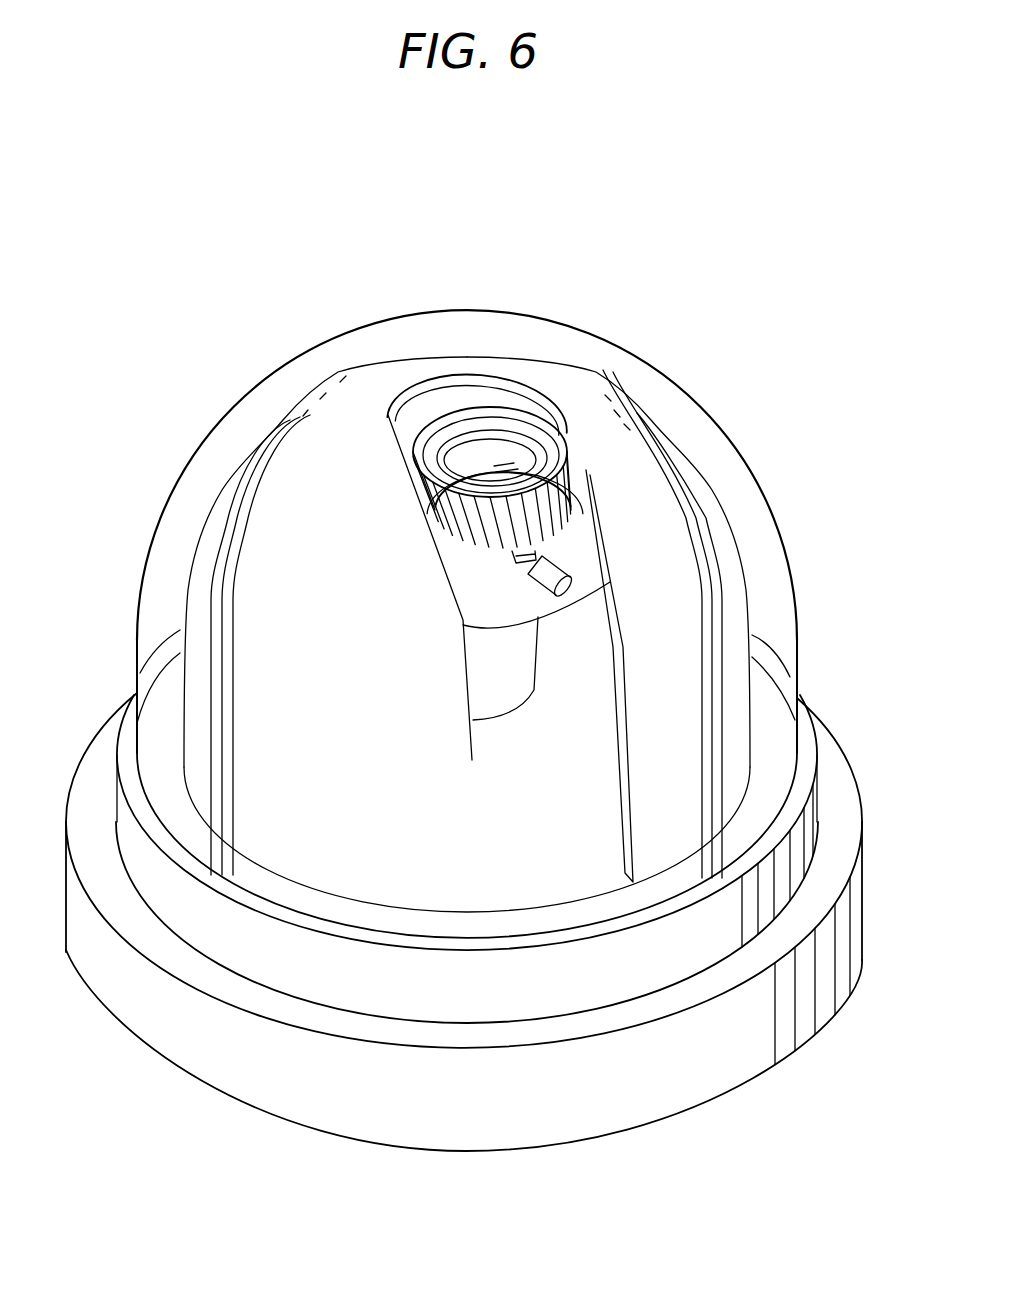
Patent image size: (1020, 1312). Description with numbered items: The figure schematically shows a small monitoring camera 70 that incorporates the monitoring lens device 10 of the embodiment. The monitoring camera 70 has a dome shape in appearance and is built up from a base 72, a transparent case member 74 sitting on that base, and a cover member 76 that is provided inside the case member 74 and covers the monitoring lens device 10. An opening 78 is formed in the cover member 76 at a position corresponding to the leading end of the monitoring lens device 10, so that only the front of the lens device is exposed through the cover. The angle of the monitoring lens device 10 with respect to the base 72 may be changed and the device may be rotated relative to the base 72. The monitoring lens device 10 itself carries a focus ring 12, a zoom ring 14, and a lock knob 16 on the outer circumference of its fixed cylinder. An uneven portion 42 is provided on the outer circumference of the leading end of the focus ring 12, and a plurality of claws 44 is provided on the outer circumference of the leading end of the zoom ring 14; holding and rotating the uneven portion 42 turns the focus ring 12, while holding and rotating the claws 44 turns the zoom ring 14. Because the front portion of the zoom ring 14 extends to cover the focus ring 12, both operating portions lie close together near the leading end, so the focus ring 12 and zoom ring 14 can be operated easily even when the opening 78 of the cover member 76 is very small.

The monitoring camera 70 is at (421, 262).
The case member 74 is at (342, 335).
The base 72 is at (650, 1093).
The cover member 76 is at (740, 630).
The opening 78 is at (627, 848).
The monitoring lens device 10 is at (487, 400).
The zoom ring 14 is at (467, 578).
The focus ring 12 is at (563, 453).
The uneven portion 42 is at (531, 513).
The claws 44 is at (534, 550).
The lock knob 16 is at (568, 585).